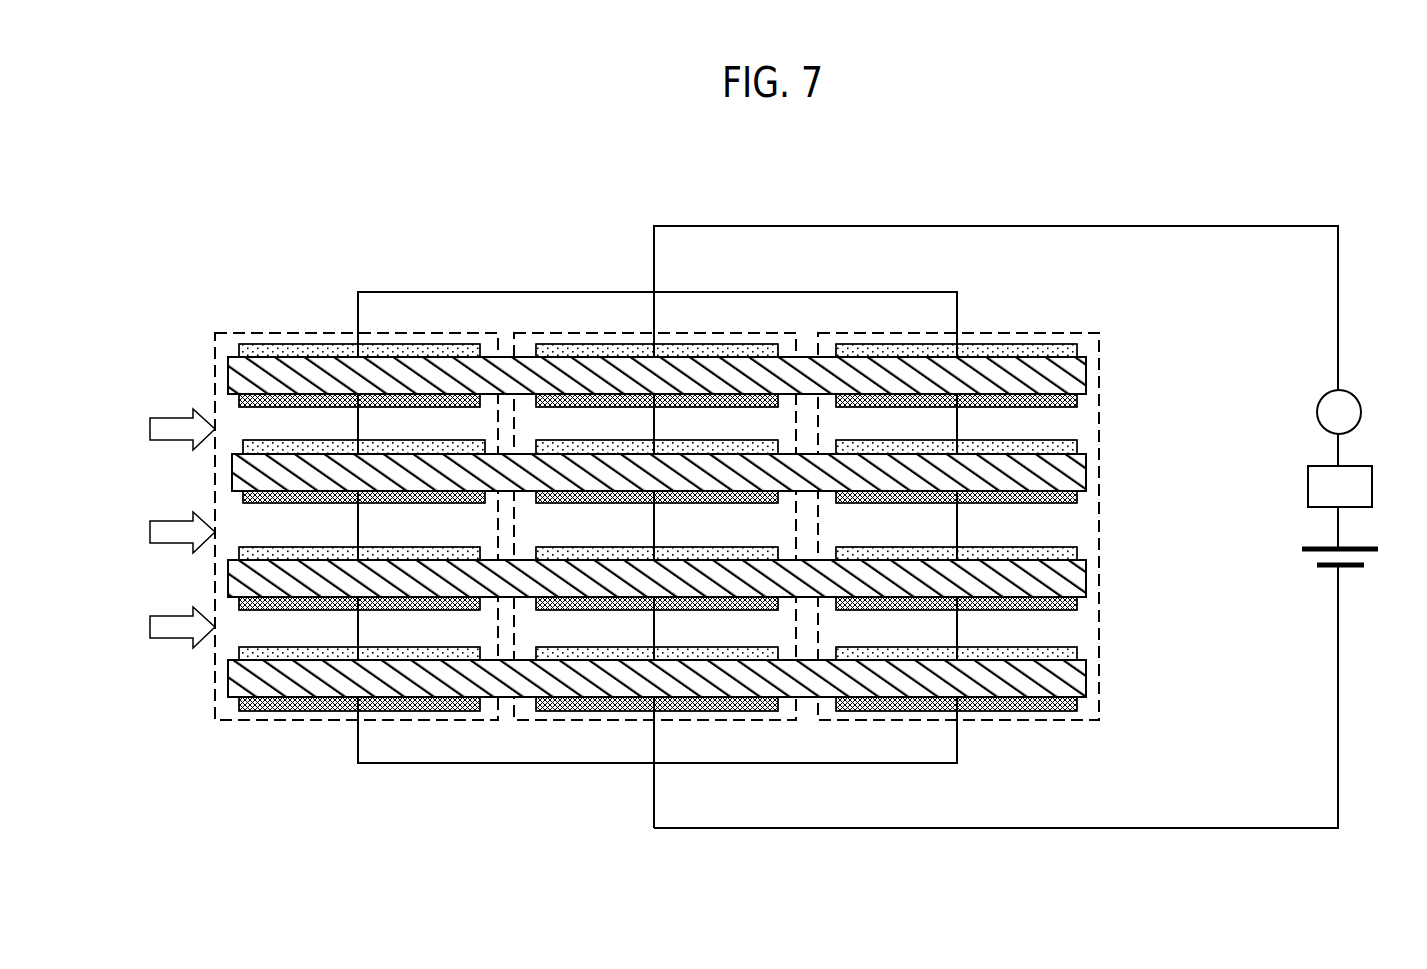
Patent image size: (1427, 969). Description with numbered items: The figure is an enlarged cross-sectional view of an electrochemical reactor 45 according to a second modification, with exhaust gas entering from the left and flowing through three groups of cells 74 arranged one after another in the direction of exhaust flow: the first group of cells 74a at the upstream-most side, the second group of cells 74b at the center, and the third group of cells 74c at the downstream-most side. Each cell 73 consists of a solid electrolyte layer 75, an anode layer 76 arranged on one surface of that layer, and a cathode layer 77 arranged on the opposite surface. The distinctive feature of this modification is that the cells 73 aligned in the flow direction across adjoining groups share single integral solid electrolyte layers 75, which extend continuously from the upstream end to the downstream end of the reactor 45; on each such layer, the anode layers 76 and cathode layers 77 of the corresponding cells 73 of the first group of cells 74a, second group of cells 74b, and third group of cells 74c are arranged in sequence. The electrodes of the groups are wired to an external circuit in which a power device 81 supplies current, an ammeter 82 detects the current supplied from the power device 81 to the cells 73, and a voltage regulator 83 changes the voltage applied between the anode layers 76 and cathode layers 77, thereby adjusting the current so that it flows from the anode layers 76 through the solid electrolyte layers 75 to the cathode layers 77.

The electrochemical reactor 45 is at (1298, 200).
The cell 73 is at (358, 232).
The group of cells 74 is at (657, 574).
The first group of cells 74a is at (433, 722).
The second group of cells 74b is at (713, 722).
The third group of cells 74c is at (1015, 722).
The solid electrolyte layer 75 is at (290, 378).
The anode layer 76 is at (336, 357).
The cathode layer 77 is at (253, 392).
The power device 81 is at (1352, 568).
The ammeter 82 is at (1352, 396).
The voltage regulator 83 is at (1362, 466).